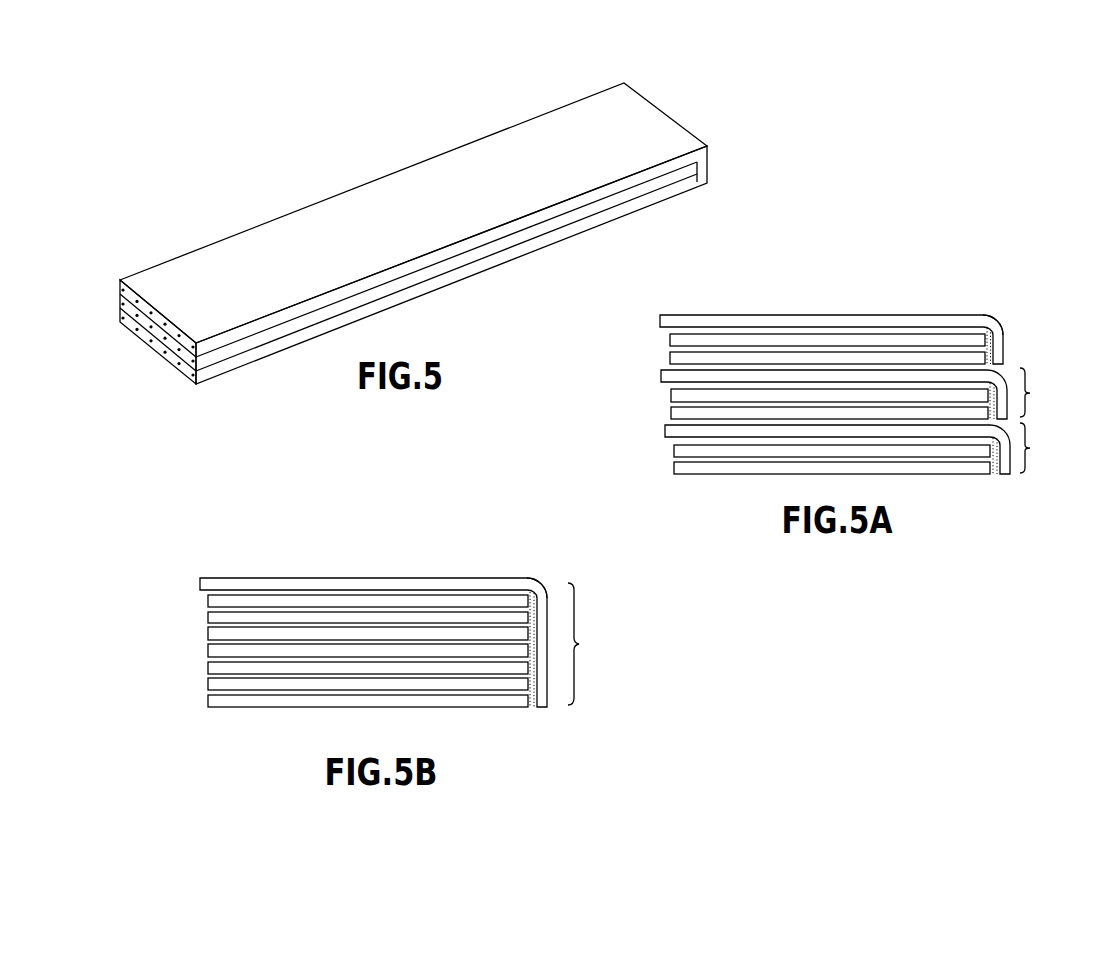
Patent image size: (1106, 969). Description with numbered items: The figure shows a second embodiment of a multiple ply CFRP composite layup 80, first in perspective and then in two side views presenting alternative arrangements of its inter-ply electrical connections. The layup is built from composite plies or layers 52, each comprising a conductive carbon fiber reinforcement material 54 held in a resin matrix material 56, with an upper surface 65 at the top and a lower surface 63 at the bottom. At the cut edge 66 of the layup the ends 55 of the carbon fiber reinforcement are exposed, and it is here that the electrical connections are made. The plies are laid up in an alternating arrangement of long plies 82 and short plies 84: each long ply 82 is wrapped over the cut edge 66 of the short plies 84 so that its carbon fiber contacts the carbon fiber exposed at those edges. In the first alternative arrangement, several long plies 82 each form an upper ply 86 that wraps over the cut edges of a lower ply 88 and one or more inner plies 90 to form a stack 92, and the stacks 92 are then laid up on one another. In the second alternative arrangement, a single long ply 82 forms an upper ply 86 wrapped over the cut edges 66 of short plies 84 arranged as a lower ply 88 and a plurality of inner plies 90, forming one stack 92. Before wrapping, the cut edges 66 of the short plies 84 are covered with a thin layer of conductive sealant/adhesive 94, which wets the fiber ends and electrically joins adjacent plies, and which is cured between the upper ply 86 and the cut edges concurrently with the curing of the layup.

In FIG. 5, the CFRP composite layup 80 is at (474, 124).
In FIG. 5, the ends of the conductive carbon fiber reinforcement material 55 is at (677, 122).
In FIG. 5, the resin matrix material 56 is at (197, 260).
In FIG. 5, the composite plies or layers 52 is at (118, 312).
In FIG. 5A, the composite plies or layers 52 is at (850, 340).
In FIG. 5, the conductive carbon fiber reinforcement material 54 is at (135, 313).
In FIG. 5A, the upper surface 65 is at (765, 313).
In FIG. 5A, the long plies 82 is at (658, 319).
In FIG. 5B, the long plies 82 is at (200, 582).
In FIG. 5A, the short plies 84 is at (673, 452).
In FIG. 5B, the short plies 84 is at (208, 633).
In FIG. 5A, the lower surface 63 is at (752, 477).
In FIG. 5A, the inner plies 90 is at (920, 338).
In FIG. 5B, the inner plies 90 is at (483, 653).
In FIG. 5A, the cut edge 66 is at (976, 325).
In FIG. 5B, the cut edge 66 is at (523, 613).
In FIG. 5A, the lower ply 88 is at (982, 360).
In FIG. 5B, the lower ply 88 is at (345, 702).
In FIG. 5A, the stack 92 is at (1039, 420).
In FIG. 5B, the stack 92 is at (589, 644).
In FIG. 5A, the conductive sealant/adhesive 94 is at (988, 474).
In FIG. 5B, the conductive sealant/adhesive 94 is at (530, 706).
In FIG. 5B, the upper ply 86 is at (403, 575).